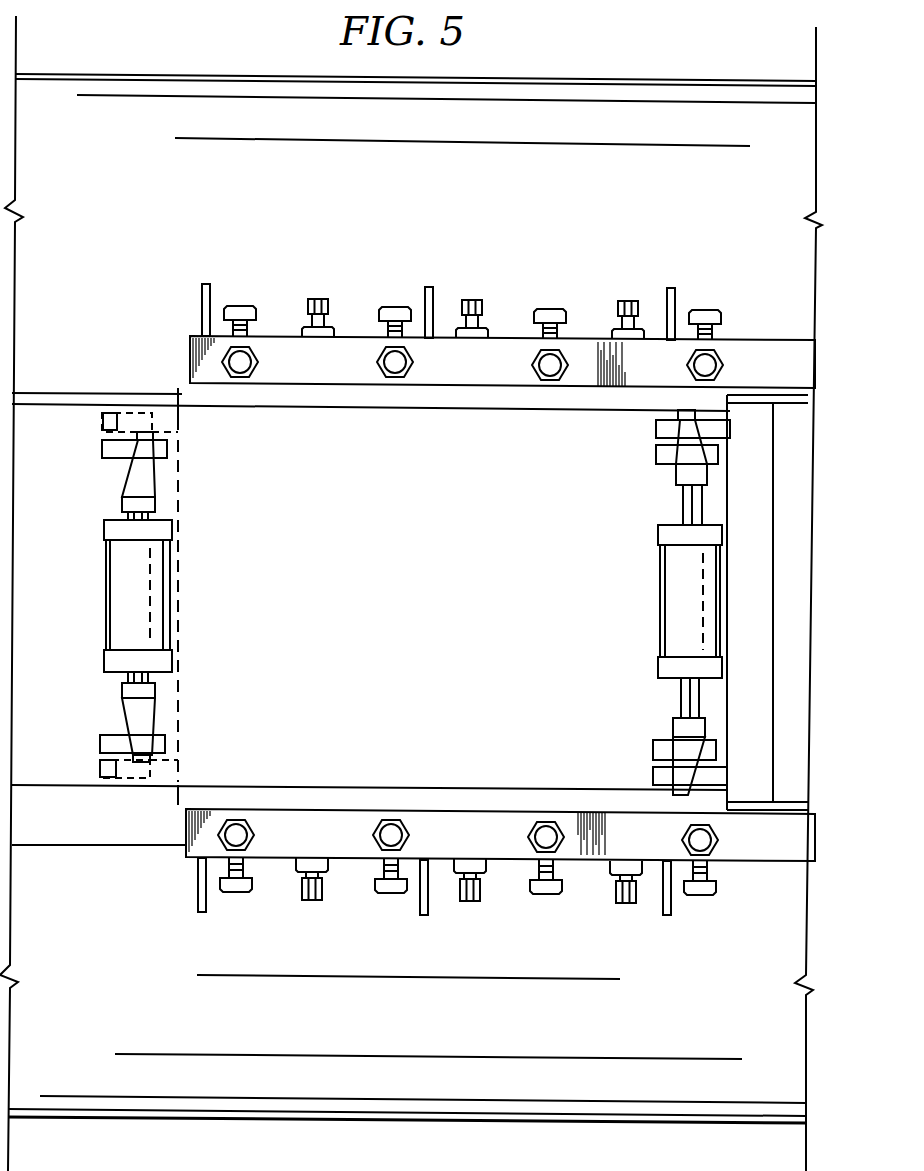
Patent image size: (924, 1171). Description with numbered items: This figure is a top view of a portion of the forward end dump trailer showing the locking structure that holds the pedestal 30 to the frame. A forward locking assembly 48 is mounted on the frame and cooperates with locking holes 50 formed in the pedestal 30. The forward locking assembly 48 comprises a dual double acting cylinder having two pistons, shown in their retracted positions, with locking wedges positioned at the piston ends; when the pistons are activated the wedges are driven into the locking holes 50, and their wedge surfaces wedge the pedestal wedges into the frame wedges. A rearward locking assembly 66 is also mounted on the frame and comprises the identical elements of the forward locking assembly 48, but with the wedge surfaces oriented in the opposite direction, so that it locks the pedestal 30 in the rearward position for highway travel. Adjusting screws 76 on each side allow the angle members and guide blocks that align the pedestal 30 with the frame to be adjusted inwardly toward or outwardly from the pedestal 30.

The pedestal 30 is at (100, 423).
The forward locking assembly 48 is at (167, 596).
The locking holes 50 is at (127, 418).
The rearward locking assembly 66 is at (637, 601).
The adjusting screws 76 is at (478, 297).